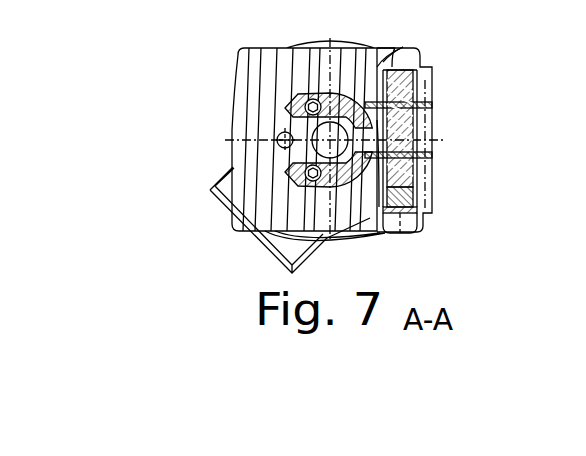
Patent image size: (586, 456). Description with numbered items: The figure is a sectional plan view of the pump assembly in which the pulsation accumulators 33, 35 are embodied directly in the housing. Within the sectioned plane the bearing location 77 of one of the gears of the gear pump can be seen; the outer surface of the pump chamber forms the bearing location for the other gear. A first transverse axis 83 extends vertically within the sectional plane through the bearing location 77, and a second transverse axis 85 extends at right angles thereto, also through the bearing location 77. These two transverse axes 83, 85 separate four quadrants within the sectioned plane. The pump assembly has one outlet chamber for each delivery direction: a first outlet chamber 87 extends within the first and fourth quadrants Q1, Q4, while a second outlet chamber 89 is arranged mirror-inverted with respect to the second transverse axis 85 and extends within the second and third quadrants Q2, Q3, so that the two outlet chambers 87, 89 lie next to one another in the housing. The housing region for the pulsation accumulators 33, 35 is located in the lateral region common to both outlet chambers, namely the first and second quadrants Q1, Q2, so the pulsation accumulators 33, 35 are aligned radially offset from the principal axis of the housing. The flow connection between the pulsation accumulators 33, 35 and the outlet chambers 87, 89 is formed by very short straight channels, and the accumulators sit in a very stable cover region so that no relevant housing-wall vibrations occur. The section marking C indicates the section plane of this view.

The first transverse axis 83 is at (328, 72).
The fourth quadrant Q4 is at (257, 83).
The bearing location 77 is at (315, 128).
The second transverse axis 85 is at (253, 137).
The third quadrant Q3 is at (267, 210).
The second quadrant Q2 is at (367, 218).
The second outlet chamber 89 is at (396, 238).
The pulsation accumulator 35 is at (410, 183).
The pulsation accumulator 33 is at (410, 118).
The first outlet chamber 87 is at (403, 88).
The first quadrant Q1 is at (403, 47).
The axis C is at (396, 31).